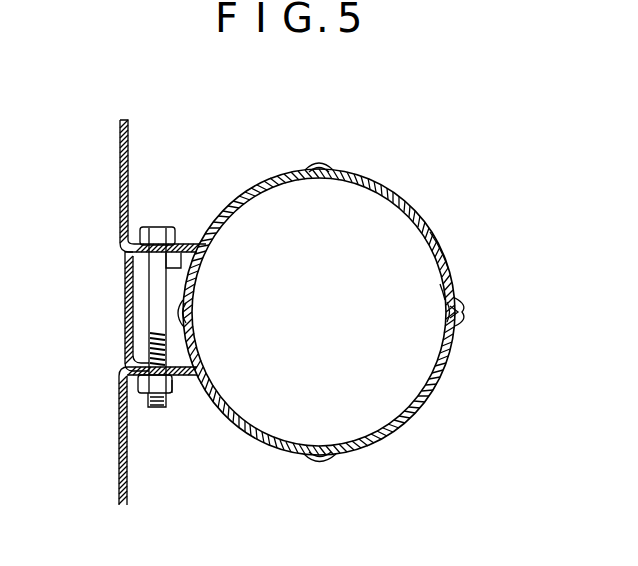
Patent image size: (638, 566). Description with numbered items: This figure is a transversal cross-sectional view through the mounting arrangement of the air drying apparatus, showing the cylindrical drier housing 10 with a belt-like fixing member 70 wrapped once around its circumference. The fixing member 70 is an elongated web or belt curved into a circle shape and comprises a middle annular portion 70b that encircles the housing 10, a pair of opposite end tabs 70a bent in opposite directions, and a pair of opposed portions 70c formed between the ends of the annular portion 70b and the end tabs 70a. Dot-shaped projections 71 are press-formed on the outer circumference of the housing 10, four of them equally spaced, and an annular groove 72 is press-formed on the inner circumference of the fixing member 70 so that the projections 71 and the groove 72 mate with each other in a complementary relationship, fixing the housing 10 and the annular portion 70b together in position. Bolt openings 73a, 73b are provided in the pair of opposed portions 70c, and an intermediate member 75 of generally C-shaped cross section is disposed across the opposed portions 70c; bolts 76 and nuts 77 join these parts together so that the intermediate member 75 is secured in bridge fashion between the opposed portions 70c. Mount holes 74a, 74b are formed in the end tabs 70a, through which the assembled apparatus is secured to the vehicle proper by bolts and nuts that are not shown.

The drier housing 10 is at (443, 292).
The belt-like fixing member 70 is at (392, 182).
The end tabs 70a is at (120, 209).
The annular portion 70b is at (423, 217).
The opposed portions 70c is at (140, 235).
The projections 71 is at (462, 307).
The annular groove 72 is at (458, 328).
The bolt opening 73a is at (170, 262).
The bolt opening 73b is at (168, 397).
The mount hole 74a is at (122, 155).
The mount hole 74b is at (121, 477).
The intermediate member 75 is at (127, 315).
The bolts 76 is at (157, 279).
The nuts 77 is at (157, 412).